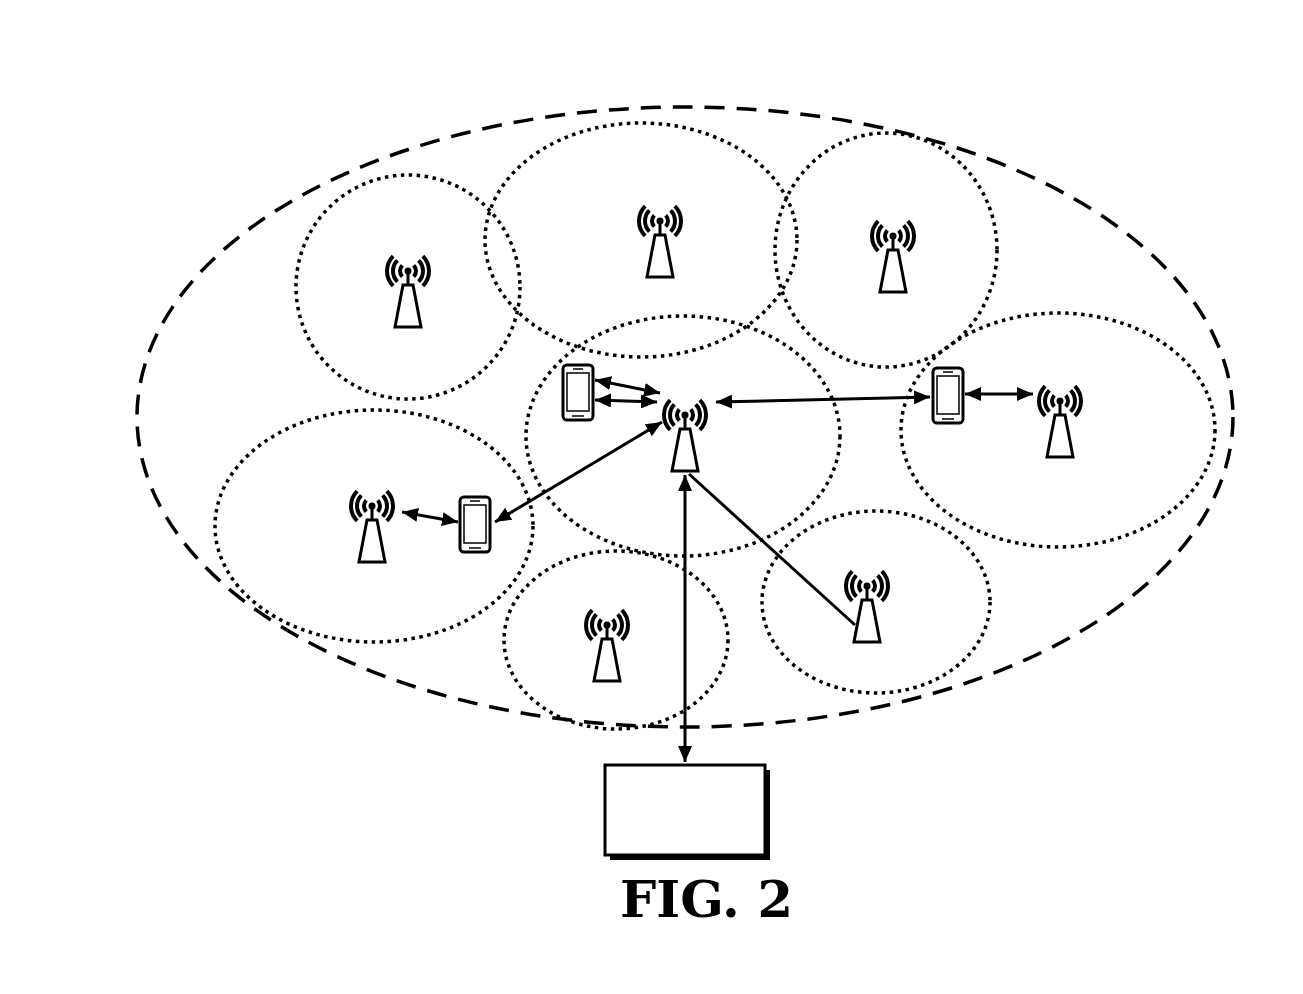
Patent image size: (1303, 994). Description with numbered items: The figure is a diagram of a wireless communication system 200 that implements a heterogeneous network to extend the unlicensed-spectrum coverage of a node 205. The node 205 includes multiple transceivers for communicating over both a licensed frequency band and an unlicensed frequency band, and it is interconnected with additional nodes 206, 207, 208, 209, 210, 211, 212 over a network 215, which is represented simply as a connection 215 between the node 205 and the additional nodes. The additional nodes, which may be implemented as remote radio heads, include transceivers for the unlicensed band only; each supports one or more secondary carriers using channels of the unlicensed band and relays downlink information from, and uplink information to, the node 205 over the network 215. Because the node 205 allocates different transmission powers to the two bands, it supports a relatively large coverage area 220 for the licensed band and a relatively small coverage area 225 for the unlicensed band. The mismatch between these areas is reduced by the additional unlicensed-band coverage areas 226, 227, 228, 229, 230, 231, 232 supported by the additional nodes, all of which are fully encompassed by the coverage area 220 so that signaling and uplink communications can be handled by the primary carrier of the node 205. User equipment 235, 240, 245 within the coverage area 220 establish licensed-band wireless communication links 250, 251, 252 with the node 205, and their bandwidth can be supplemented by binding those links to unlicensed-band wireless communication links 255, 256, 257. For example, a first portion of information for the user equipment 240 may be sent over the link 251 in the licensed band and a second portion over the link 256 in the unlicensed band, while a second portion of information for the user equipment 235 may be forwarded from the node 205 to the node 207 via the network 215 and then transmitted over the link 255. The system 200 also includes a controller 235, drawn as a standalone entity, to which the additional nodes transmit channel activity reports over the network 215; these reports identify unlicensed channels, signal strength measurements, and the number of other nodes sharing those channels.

The wireless communication system 200 is at (1168, 118).
The node 205 is at (700, 465).
The node 206 is at (593, 673).
The node 207 is at (362, 548).
The node 208 is at (393, 320).
The node 209 is at (645, 268).
The node 210 is at (880, 283).
The node 211 is at (1073, 448).
The node 212 is at (882, 635).
The network 215 is at (743, 518).
The coverage area 220 is at (212, 262).
The coverage area 225 is at (842, 423).
The coverage area 226 is at (527, 690).
The coverage area 227 is at (290, 418).
The coverage area 228 is at (352, 187).
The coverage area 229 is at (638, 120).
The coverage area 230 is at (980, 187).
The coverage area 231 is at (1160, 342).
The coverage area 232 is at (957, 662).
The controller 235 is at (475, 555).
The user equipment 240 is at (563, 408).
The user equipment 245 is at (945, 423).
The wireless communication link 250 is at (614, 408).
The wireless communication link 251 is at (628, 383).
The wireless communication link 252 is at (813, 400).
The wireless communication link 255 is at (425, 512).
The wireless communication link 256 is at (633, 405).
The wireless communication link 257 is at (992, 390).